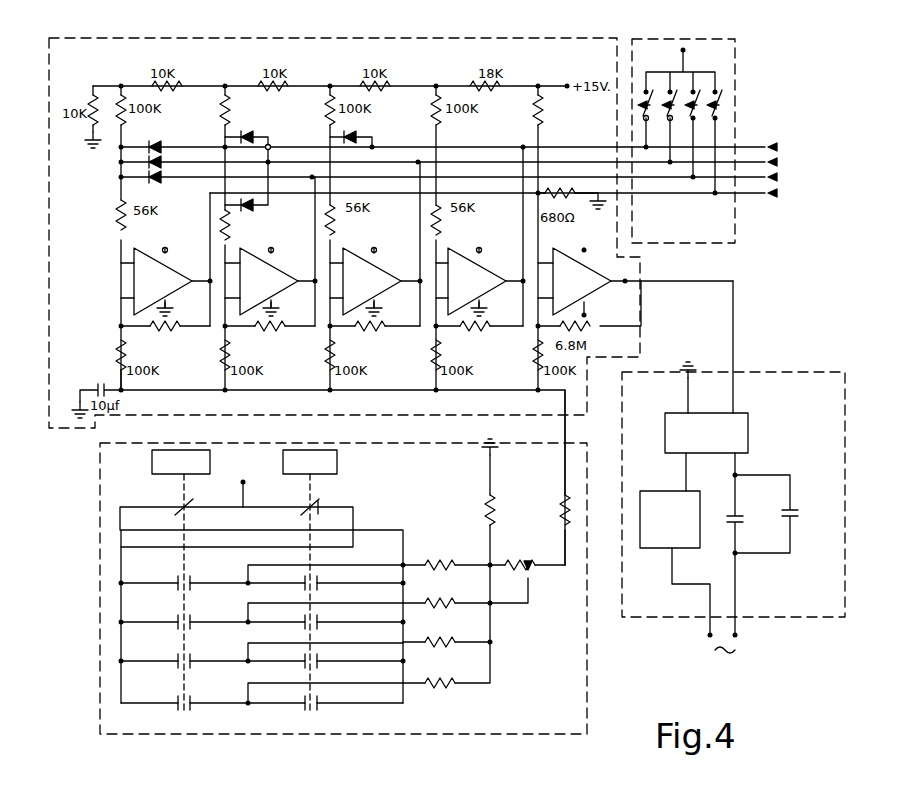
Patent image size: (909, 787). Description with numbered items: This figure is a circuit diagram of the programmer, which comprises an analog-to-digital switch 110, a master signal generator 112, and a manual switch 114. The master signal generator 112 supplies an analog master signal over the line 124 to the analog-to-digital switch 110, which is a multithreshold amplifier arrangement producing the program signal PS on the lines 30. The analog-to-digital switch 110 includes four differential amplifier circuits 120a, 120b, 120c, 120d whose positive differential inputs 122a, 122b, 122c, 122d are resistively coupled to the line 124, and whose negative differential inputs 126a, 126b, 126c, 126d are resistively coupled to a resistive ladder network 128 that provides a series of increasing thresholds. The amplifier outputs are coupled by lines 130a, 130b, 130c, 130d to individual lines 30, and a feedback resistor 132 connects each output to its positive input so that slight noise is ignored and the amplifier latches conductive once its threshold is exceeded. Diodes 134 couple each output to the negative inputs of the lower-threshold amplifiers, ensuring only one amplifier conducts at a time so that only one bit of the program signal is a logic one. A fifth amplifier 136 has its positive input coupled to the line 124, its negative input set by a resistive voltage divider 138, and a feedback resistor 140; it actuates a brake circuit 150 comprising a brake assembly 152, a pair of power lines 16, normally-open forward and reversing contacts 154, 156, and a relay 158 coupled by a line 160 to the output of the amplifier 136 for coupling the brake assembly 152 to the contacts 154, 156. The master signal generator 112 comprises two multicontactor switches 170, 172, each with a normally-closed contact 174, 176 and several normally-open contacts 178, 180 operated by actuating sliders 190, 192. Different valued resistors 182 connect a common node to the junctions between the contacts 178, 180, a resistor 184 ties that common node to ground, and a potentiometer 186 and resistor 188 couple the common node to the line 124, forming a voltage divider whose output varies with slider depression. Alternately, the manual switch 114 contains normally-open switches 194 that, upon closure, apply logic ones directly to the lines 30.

The analog-to-digital switch 110 is at (160, 33).
The resistive ladder network 128 is at (300, 104).
The diodes 134 is at (245, 199).
The resistive voltage divider 138 is at (543, 130).
The lines 30 is at (753, 146).
The manual switch 114 is at (738, 55).
The switches 194 is at (744, 101).
The differential amplifier circuit 120a is at (163, 273).
The differential amplifier circuit 120b is at (273, 273).
The differential amplifier circuit 120c is at (377, 273).
The differential amplifier circuit 120d is at (482, 273).
The negative differential input 126a is at (117, 265).
The negative differential input 126b is at (231, 263).
The negative differential input 126c is at (333, 260).
The negative differential input 126d is at (440, 262).
The positive differential input 122a is at (119, 326).
The positive differential input 122b is at (223, 340).
The positive differential input 122c is at (328, 340).
The positive differential input 122d is at (434, 334).
The output line 130a is at (210, 284).
The output line 130b is at (314, 284).
The output line 130c is at (417, 284).
The output line 130d is at (522, 284).
The feedback resistor 132 is at (322, 347).
The fifth amplifier 136 is at (635, 273).
The feedback resistor 140 is at (625, 325).
The line 124 is at (510, 395).
The line 160 is at (737, 337).
The brake circuit 150 is at (847, 413).
The relay 158 is at (750, 432).
The brake assembly 152 is at (655, 548).
The forward contact 154 is at (742, 540).
The reversing contact 156 is at (792, 506).
The lines 16 is at (684, 590).
The master signal generator 112 is at (100, 508).
The actuating slider 190 is at (210, 464).
The actuating slider 192 is at (338, 464).
The multicontactor switch 170 is at (165, 503).
The normally-closed contact 174 is at (188, 512).
The normally-closed contact 176 is at (305, 510).
The multicontactor switch 172 is at (361, 522).
The normally-open contacts 178 is at (178, 706).
The normally-open contacts 180 is at (324, 706).
The different valued resistors 182 is at (456, 686).
The resistor 184 is at (487, 502).
The potentiometer 186 is at (530, 588).
The resistor 188 is at (559, 503).